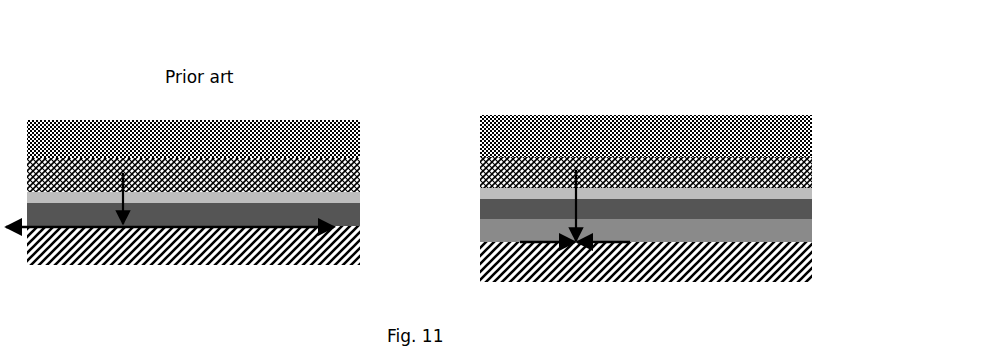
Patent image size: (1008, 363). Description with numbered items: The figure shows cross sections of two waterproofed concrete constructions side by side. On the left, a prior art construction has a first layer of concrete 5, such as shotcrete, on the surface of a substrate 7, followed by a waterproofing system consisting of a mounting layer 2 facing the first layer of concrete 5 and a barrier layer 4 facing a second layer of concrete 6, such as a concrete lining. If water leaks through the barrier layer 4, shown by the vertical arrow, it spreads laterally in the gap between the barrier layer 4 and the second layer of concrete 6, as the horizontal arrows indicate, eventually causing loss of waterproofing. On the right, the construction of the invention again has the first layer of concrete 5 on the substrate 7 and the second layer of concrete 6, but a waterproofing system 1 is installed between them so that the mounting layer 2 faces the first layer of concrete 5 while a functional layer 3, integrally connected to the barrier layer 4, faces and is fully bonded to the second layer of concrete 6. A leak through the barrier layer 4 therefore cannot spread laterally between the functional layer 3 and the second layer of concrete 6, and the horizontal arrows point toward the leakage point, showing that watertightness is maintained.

The waterproofing system 1 is at (884, 187).
The mounting layer 2 is at (360, 199).
The functional layer 3 is at (812, 233).
The barrier layer 4 is at (360, 221).
The first layer of concrete 5 is at (360, 173).
The second layer of concrete 6 is at (360, 255).
The substrate 7 is at (360, 140).